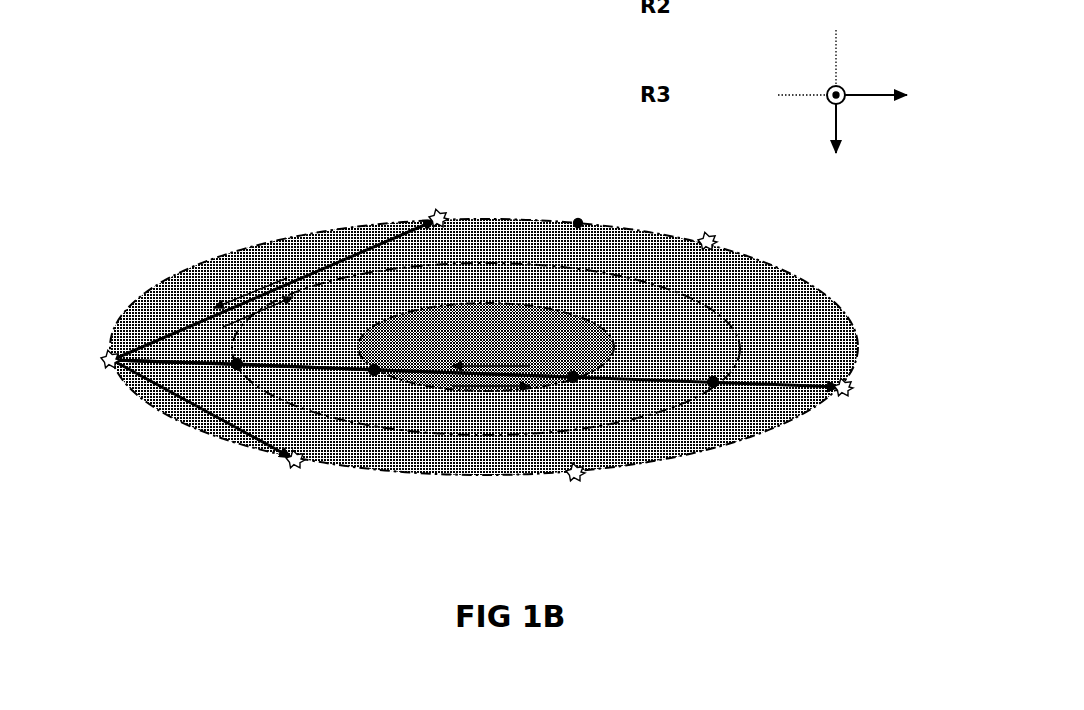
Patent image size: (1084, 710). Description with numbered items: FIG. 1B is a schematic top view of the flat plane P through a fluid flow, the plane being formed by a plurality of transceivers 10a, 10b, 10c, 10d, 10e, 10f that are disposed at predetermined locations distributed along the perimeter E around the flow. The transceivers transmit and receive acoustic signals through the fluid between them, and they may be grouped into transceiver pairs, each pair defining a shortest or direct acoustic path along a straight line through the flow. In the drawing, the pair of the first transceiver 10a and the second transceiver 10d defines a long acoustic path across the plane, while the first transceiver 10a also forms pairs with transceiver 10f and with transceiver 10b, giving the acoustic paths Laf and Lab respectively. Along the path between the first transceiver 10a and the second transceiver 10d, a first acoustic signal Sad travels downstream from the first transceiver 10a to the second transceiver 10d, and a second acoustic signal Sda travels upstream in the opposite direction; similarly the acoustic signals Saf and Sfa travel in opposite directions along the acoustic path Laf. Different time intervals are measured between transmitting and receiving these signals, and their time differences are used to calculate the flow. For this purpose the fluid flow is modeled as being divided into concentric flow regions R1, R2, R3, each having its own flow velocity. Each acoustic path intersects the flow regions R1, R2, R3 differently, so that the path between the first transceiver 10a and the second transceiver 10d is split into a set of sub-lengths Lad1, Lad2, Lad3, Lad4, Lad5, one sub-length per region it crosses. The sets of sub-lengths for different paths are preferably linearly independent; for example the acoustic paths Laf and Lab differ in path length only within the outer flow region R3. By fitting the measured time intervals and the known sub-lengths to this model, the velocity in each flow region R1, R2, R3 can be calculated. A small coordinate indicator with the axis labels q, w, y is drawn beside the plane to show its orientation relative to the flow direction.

The flat plane P is at (155, 207).
The perimeter E is at (579, 220).
The flow region R1 is at (486, 347).
The flow region R2 is at (486, 349).
The flow region R3 is at (484, 347).
The first transceiver 10a is at (106, 364).
The transceiver 10b is at (287, 468).
The transceiver 10c is at (588, 477).
The second transceiver 10d is at (852, 396).
The transceiver 10e is at (715, 231).
The transceiver 10f is at (437, 208).
The acoustic path Laf is at (307, 277).
The acoustic path Lab is at (217, 421).
The sub-length Lad1 is at (186, 368).
The sub-length Lad2 is at (320, 372).
The sub-length Lad3 is at (440, 376).
The sub-length Lad4 is at (646, 385).
The sub-length Lad5 is at (782, 388).
The acoustic signal Sfa is at (247, 288).
The acoustic signal Saf is at (259, 321).
The second acoustic signal Sda is at (491, 352).
The first acoustic signal Sad is at (493, 404).
The origin / axis q is at (811, 67).
The axis w is at (887, 96).
The axis y is at (835, 143).